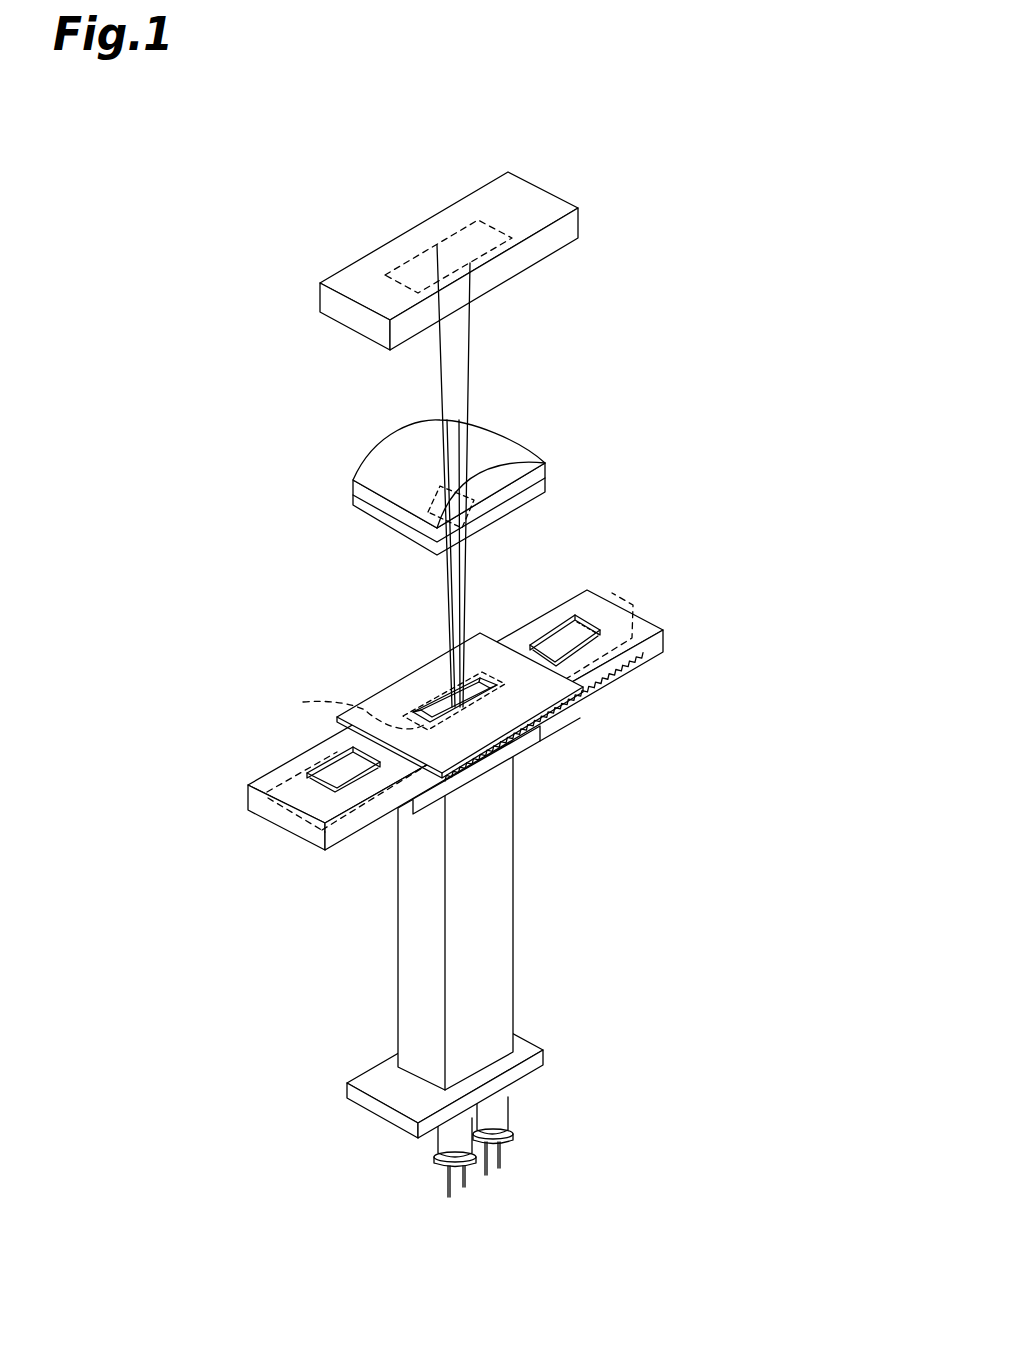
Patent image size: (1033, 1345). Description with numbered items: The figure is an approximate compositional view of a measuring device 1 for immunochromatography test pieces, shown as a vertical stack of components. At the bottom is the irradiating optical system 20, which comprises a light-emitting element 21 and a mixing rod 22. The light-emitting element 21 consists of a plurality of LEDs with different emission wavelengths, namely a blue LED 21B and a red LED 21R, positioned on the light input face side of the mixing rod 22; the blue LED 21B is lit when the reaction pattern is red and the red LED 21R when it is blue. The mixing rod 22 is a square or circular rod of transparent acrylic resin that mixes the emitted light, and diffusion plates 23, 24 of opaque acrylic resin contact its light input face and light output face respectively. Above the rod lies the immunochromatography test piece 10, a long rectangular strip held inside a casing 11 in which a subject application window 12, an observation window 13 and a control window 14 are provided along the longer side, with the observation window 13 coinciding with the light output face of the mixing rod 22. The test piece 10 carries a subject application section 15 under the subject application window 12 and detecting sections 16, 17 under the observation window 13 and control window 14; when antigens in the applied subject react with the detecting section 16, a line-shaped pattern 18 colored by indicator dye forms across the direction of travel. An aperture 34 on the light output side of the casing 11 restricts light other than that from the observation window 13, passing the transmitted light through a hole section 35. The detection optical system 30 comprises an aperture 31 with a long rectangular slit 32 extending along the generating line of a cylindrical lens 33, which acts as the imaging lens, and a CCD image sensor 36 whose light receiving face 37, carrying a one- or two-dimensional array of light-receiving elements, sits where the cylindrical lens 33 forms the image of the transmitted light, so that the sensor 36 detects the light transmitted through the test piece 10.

The measuring device 1 is at (678, 264).
The immunochromatography test piece 10 is at (633, 607).
The casing 11 is at (667, 640).
The subject application window 12 is at (365, 782).
The observation window 13 is at (349, 709).
The control window 14 is at (577, 652).
The subject application section 15 is at (332, 775).
The detecting section 16 is at (412, 708).
The detecting section 17 is at (557, 643).
The line-shaped pattern 18 is at (437, 697).
The irradiating optical system 20 is at (658, 848).
The light-emitting element 21 is at (622, 1090).
The red LED 21R is at (497, 1115).
The blue LED 21B is at (457, 1135).
The mixing rod 22 is at (503, 960).
The diffusion plate 23 is at (537, 1060).
The diffusion plate 24 is at (527, 743).
The detection optical system 30 is at (262, 487).
The aperture 31 is at (510, 510).
The slit 32 is at (428, 518).
The cylindrical lens 33 is at (522, 482).
The aperture 34 is at (363, 702).
The hole section 35 is at (492, 680).
The CCD image sensor 36 is at (545, 208).
The light receiving face 37 is at (400, 263).